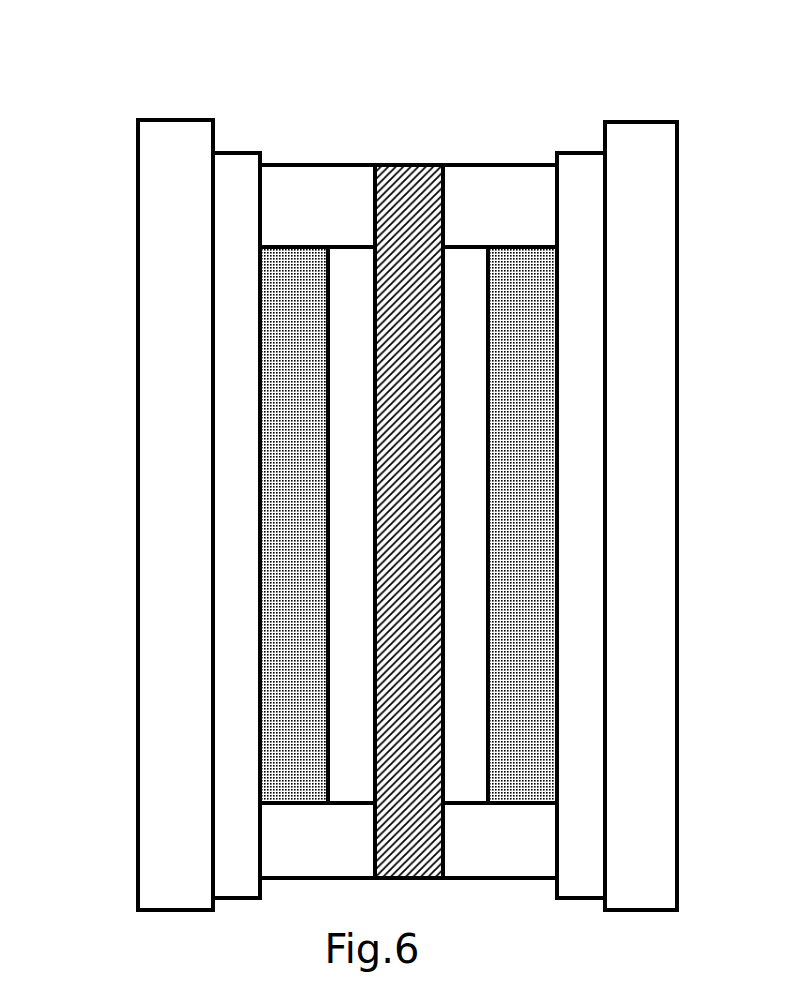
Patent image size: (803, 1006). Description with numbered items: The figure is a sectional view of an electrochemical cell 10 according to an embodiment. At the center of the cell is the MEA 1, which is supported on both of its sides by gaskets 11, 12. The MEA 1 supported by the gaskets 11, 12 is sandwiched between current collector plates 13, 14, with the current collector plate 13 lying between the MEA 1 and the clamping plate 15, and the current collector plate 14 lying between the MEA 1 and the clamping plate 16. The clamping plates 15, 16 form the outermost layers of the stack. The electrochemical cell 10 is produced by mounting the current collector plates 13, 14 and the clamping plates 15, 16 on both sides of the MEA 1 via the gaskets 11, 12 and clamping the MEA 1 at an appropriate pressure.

The electrochemical cell 10 is at (77, 38).
The MEA 1 is at (392, 235).
The gasket 11 is at (298, 218).
The gasket 12 is at (478, 218).
The current collector plate 13 is at (233, 178).
The current collector plate 14 is at (567, 167).
The clamping plate 15 is at (168, 140).
The clamping plate 16 is at (642, 140).